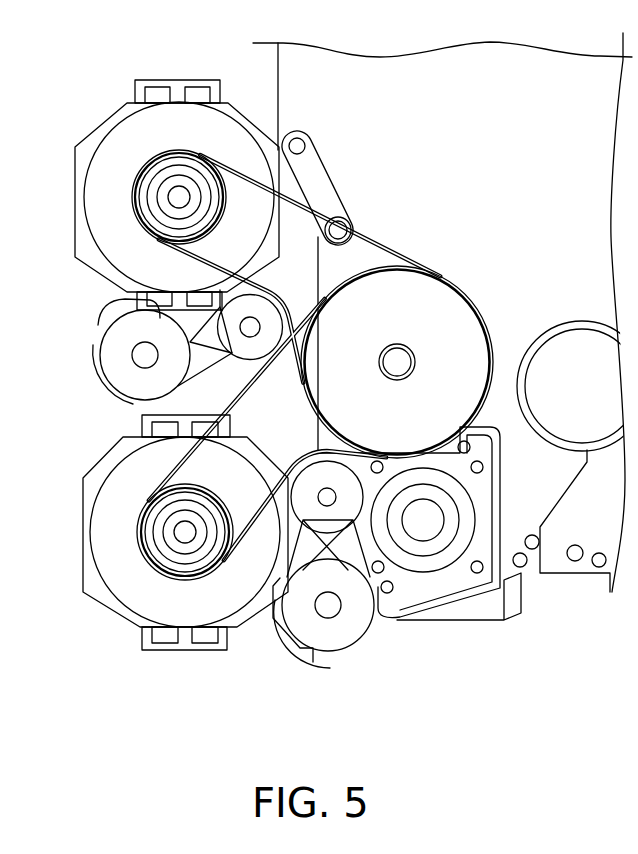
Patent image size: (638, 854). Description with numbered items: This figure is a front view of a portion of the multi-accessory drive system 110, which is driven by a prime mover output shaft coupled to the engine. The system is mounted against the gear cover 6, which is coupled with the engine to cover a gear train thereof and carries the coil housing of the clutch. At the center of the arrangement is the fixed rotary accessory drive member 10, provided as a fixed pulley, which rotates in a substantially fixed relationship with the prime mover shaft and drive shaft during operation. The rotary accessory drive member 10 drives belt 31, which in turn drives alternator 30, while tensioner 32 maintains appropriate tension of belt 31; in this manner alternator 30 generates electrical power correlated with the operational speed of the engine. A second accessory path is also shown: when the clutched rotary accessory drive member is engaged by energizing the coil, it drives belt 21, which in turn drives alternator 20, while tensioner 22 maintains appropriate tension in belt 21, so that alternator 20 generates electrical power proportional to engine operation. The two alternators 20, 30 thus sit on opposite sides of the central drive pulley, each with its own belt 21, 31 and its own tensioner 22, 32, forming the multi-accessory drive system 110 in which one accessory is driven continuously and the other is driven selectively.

The gear cover 6 is at (589, 581).
The rotary accessory drive member 10 is at (458, 395).
The alternator 20 is at (236, 146).
The belt 21 is at (383, 231).
The tensioner 22 is at (130, 332).
The alternator 30 is at (115, 618).
The belt 31 is at (160, 474).
The tensioner 32 is at (353, 615).
The multi-accessory drive system 110 is at (452, 695).